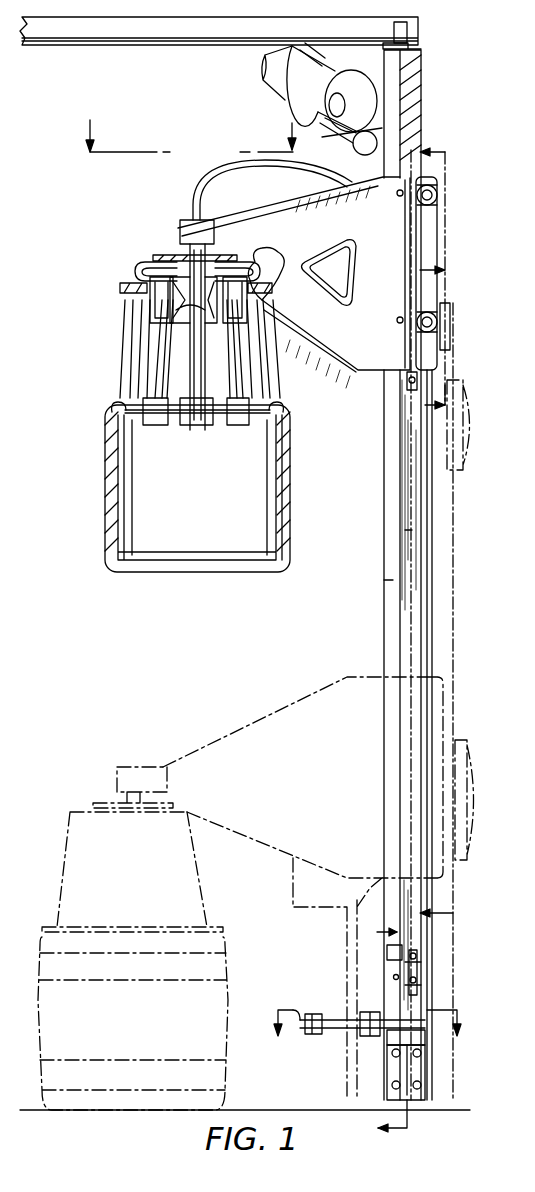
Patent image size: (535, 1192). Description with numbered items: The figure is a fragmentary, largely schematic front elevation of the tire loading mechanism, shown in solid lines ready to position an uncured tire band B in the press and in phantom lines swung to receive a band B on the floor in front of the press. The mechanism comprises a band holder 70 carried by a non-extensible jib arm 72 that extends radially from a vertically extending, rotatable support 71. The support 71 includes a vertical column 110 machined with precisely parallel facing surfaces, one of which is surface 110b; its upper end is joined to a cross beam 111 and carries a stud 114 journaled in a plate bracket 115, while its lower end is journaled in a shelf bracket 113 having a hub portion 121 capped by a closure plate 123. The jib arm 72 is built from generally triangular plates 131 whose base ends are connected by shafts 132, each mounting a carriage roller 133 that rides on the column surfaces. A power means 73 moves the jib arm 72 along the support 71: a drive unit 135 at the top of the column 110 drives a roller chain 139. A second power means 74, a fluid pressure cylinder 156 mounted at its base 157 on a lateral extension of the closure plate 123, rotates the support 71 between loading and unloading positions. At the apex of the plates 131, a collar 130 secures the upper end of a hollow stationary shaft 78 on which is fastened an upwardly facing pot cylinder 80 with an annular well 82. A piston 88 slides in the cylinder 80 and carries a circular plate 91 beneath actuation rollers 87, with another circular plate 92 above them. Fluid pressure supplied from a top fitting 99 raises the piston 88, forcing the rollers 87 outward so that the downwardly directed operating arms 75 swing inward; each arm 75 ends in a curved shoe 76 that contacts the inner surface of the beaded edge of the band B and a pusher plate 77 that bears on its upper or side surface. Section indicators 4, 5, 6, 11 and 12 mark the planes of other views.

The cross beam 111 is at (130, 32).
The stud 114 is at (407, 30).
The plate bracket 115 is at (417, 50).
The support 71 is at (427, 85).
The section line 11 is at (437, 612).
The section line 12 is at (191, 133).
The section line 6 is at (436, 342).
The section line 5 is at (384, 1042).
The section line 4 is at (369, 1032).
The power means 73 is at (291, 99).
The drive unit 135 is at (297, 68).
The jib arm 72 is at (383, 245).
The triangularly shaped plates 131 is at (342, 362).
The carriage roller 133 is at (437, 194).
The shafts 132 is at (397, 194).
The roller chain 139 is at (413, 387).
The vertical column 110 is at (384, 580).
The facing surface 110b is at (405, 532).
The shelf bracket 113 is at (418, 1067).
The hub portion 121 is at (393, 1033).
The closure plate 123 is at (352, 1033).
The power means 74 is at (332, 1033).
The cylinder 156 is at (340, 1015).
The cylinder base mounting 157 is at (292, 1020).
The band holder 70 is at (130, 260).
The top fitting 99 is at (193, 218).
The collar 130 is at (187, 233).
The actuation rollers 87 is at (210, 252).
The circular plate 92 is at (173, 258).
The circular plate 91 is at (133, 268).
The piston 88 is at (243, 270).
The pot cylinder 80 is at (173, 313).
The annular well 82 is at (233, 307).
The stationary shaft 78 is at (193, 317).
The operating arms 75 is at (122, 352).
The shoe 76 is at (190, 425).
The pusher plate 77 is at (132, 410).
The tire band B is at (282, 496).